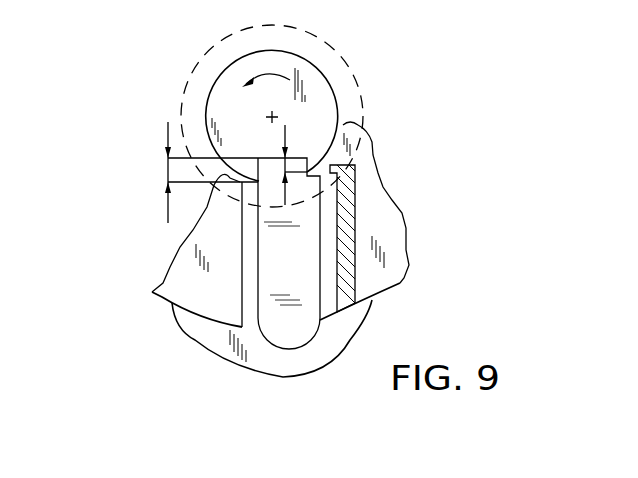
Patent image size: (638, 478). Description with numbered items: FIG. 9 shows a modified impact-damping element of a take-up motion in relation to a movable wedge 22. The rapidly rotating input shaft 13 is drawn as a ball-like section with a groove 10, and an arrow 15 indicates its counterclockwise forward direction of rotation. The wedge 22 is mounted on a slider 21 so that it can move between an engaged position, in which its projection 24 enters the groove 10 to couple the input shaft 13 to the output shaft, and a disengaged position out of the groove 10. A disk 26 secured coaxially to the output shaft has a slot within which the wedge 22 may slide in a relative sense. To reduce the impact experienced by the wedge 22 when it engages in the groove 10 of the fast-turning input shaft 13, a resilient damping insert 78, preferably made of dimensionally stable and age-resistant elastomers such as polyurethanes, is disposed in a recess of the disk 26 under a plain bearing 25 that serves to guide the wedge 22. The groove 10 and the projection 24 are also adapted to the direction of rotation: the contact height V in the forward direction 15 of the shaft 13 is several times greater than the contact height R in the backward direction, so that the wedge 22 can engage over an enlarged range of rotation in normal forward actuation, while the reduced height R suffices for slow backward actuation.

The groove 10 is at (272, 157).
The input shaft 13 is at (302, 68).
The forward direction 15 is at (260, 76).
The slider 21 is at (228, 356).
The wedge 22 is at (270, 268).
The projection 24 is at (242, 203).
The plain bearing 25 is at (332, 202).
The disk 26 is at (188, 248).
The resilient damping insert 78 is at (355, 233).
The height R is at (286, 140).
The height V is at (201, 172).